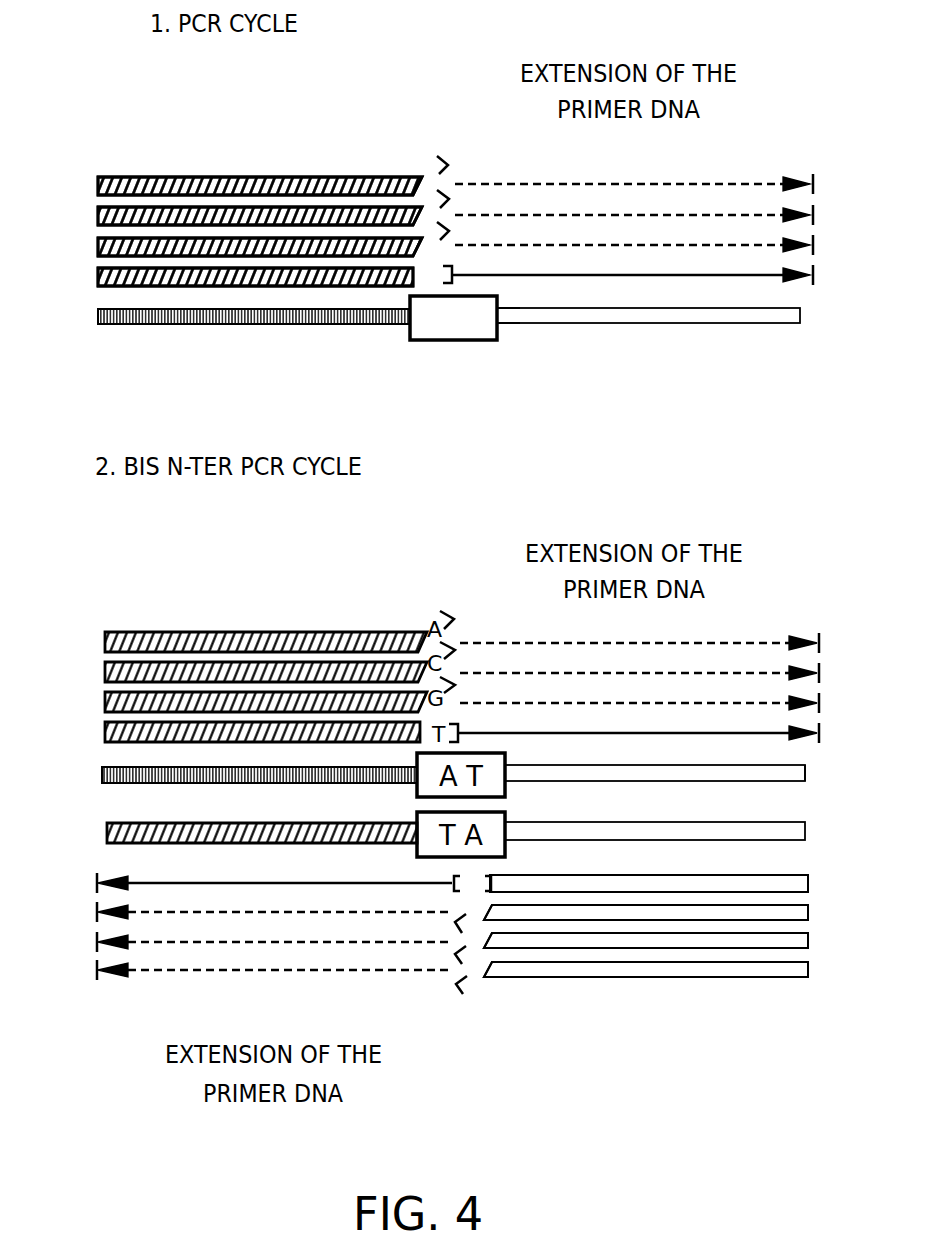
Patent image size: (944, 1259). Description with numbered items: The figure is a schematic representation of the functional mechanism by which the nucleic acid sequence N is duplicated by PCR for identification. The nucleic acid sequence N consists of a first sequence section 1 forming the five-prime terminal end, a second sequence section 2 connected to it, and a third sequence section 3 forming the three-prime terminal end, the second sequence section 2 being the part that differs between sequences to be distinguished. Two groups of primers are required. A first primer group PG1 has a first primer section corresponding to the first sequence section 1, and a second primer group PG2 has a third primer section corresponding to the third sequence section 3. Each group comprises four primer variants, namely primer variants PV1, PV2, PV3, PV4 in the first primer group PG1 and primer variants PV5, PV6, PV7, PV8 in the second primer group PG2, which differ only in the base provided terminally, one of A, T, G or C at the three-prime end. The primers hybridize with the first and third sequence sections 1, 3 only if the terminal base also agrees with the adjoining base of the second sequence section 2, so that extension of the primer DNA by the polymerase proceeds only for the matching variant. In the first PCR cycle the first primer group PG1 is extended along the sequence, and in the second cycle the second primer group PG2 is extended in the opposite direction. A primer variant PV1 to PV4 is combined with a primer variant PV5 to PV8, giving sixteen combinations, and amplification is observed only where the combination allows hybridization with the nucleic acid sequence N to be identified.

The first sequence section 1 is at (270, 325).
The second sequence section 2 is at (457, 340).
The third sequence section 3 is at (727, 323).
The nucleic acid sequence N is at (547, 342).
The primer variant PV1 is at (245, 178).
The primer variant PV2 is at (246, 209).
The primer variant PV3 is at (246, 241).
The primer variant PV4 is at (247, 277).
The primer variant PV5 is at (486, 885).
The primer variant PV6 is at (486, 917).
The primer variant PV7 is at (486, 949).
The primer variant PV8 is at (486, 980).
The first primer group PG1 is at (262, 435).
The second primer group PG2 is at (646, 977).